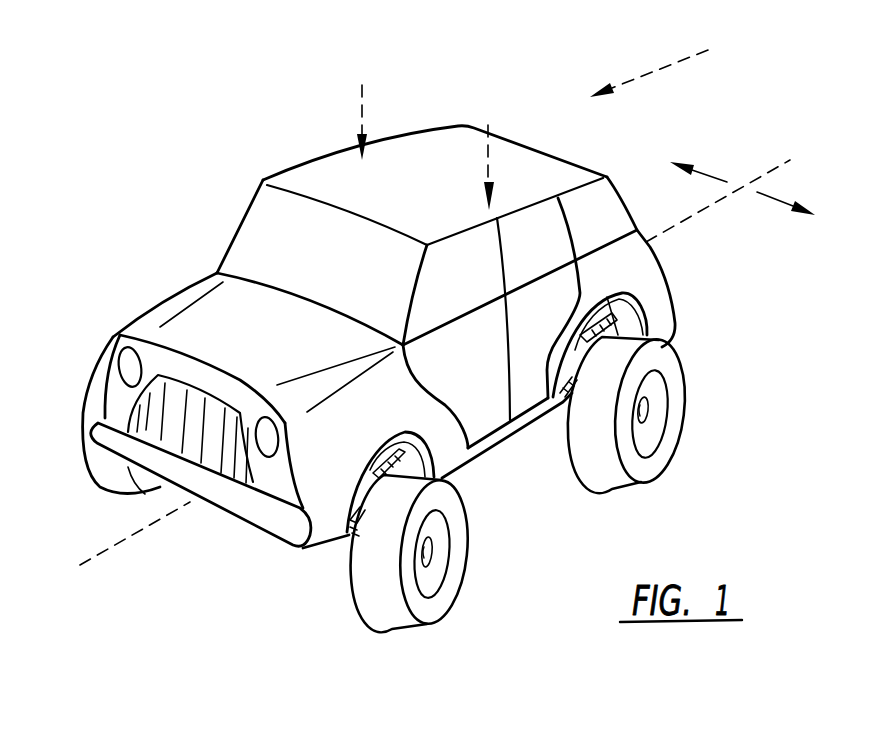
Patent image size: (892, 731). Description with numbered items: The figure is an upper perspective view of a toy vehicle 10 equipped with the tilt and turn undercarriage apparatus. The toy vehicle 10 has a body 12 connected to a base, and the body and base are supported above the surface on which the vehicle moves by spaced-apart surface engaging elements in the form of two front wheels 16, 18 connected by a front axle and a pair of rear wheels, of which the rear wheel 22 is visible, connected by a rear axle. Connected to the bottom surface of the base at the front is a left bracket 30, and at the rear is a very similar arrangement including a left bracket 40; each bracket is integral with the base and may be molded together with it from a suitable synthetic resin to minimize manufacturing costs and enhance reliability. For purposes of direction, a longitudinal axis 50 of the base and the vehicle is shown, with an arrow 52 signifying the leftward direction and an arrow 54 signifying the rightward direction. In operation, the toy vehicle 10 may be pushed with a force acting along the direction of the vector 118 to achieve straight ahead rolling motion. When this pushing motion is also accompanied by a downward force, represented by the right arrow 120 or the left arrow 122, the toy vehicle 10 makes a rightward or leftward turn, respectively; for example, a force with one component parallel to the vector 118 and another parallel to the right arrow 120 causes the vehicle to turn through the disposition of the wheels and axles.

The toy vehicle 10 is at (612, 142).
The body 12 is at (297, 178).
The front wheel 16 is at (372, 598).
The front wheel 18 is at (97, 396).
The rear wheel 22 is at (581, 451).
The left bracket 30 is at (380, 473).
The left bracket 40 is at (630, 313).
The longitudinal axis 50 is at (772, 167).
The arrow 52 is at (772, 202).
The arrow 54 is at (713, 180).
The vector 118 is at (658, 68).
The right arrow 120 is at (362, 110).
The left arrow 122 is at (490, 153).